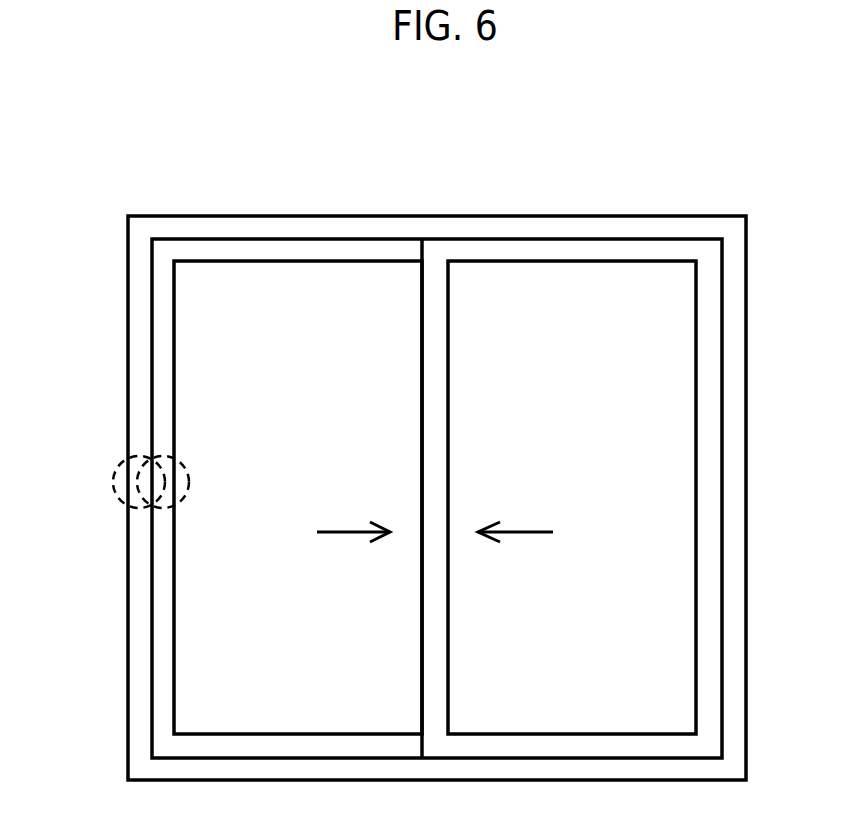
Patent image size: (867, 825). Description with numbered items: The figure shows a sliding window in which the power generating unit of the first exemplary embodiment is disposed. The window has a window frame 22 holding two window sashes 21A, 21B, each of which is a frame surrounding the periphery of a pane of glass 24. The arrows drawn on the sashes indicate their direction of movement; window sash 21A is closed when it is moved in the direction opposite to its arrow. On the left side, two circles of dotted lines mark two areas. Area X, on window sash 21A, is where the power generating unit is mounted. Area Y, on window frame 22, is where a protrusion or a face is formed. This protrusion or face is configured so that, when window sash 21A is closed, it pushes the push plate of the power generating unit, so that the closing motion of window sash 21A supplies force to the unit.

The window frame 22 is at (185, 230).
The window sash 21A is at (298, 253).
The window sash 21B is at (583, 253).
The glass 24 is at (485, 305).
The area X is at (167, 507).
The area Y is at (115, 473).